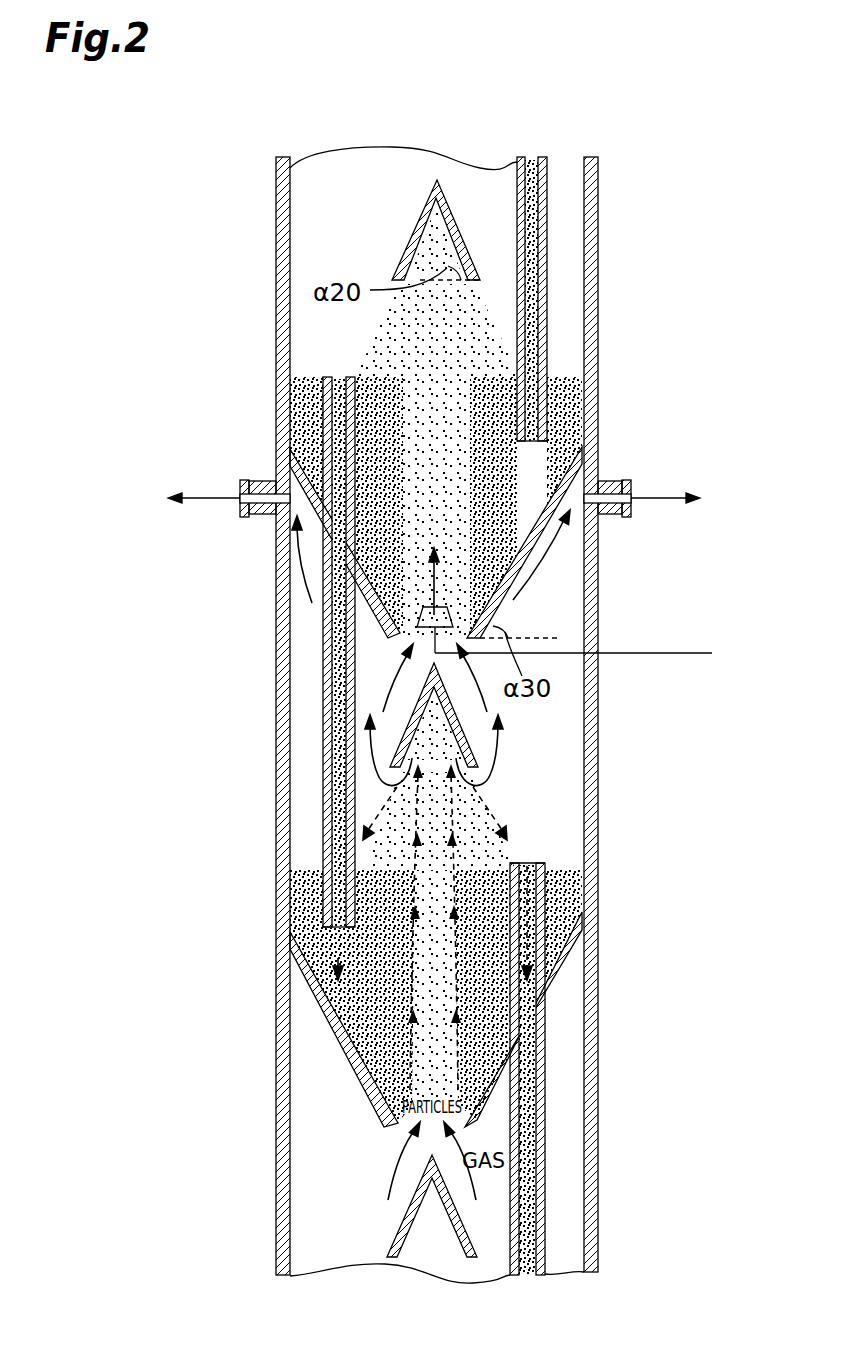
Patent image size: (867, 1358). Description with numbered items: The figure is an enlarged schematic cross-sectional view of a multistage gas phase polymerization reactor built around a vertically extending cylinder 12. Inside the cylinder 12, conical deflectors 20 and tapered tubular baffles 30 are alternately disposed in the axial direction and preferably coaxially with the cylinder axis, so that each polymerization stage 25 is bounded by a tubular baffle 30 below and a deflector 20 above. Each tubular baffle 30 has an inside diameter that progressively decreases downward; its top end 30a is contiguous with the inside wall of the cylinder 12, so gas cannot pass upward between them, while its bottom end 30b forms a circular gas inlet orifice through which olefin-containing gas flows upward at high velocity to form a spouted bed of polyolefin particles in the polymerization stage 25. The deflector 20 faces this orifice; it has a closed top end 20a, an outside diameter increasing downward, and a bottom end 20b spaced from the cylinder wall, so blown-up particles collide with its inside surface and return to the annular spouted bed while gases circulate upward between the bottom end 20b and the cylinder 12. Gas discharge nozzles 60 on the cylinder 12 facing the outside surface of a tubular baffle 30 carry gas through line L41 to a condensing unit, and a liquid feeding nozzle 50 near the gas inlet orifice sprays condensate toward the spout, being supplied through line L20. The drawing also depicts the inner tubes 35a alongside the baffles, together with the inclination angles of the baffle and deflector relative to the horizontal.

The cylinder 12 is at (276, 199).
The deflector 20 is at (422, 718).
The top end 20a is at (428, 664).
The bottom end 20b is at (480, 789).
The polymerization stage 25 is at (582, 462).
The tubular baffle 30 is at (426, 756).
The top end 30a is at (289, 417).
The bottom end 30b is at (393, 645).
The downcomer tube 35a is at (547, 252).
The liquid feeding nozzle 50 is at (422, 609).
The gas discharge nozzle 60 is at (258, 481).
The line L20 is at (687, 652).
The line L41 is at (200, 499).